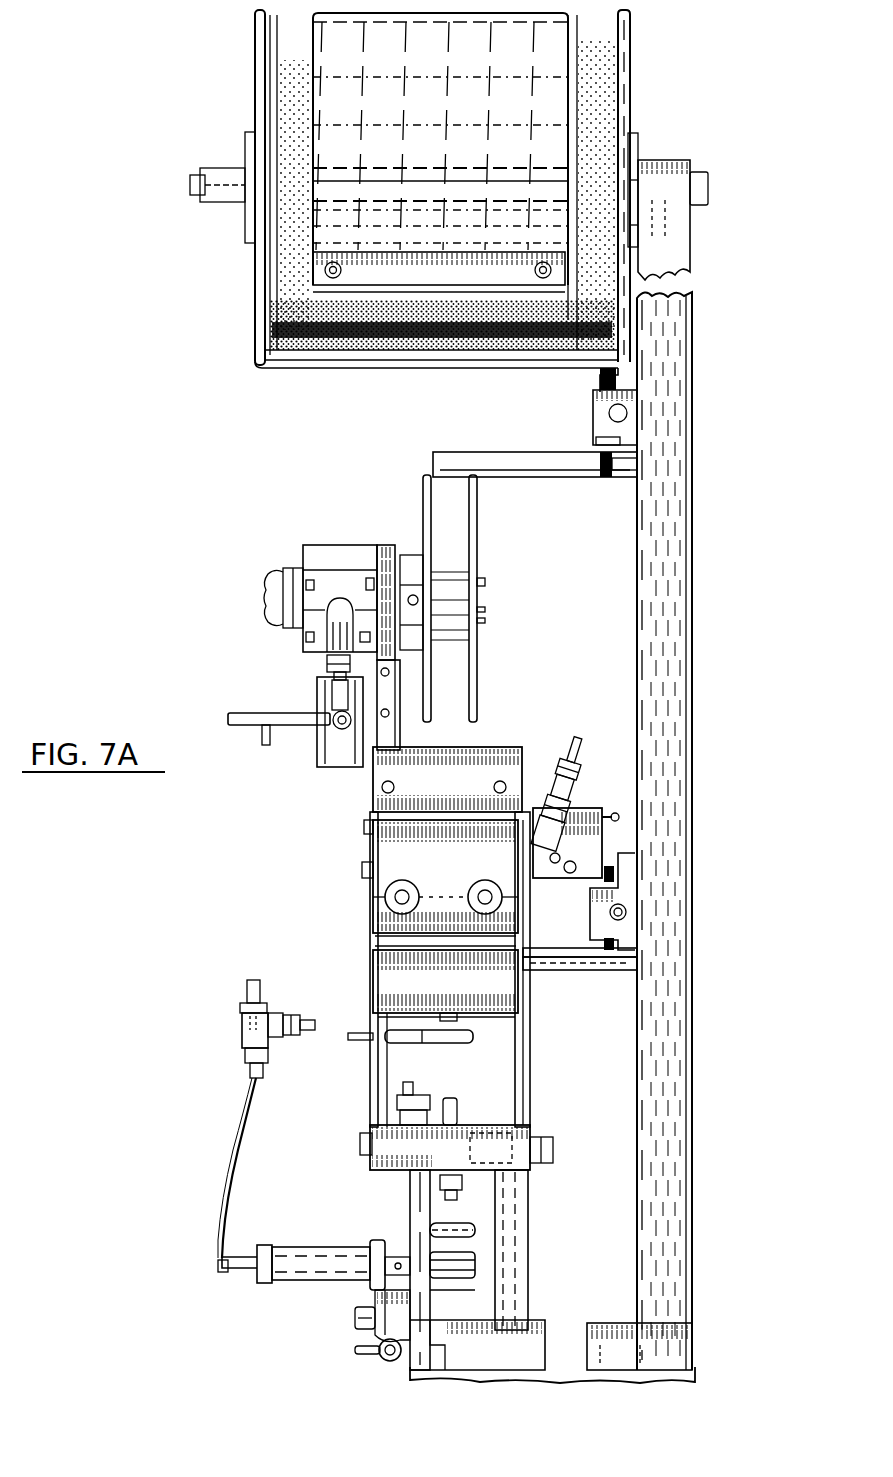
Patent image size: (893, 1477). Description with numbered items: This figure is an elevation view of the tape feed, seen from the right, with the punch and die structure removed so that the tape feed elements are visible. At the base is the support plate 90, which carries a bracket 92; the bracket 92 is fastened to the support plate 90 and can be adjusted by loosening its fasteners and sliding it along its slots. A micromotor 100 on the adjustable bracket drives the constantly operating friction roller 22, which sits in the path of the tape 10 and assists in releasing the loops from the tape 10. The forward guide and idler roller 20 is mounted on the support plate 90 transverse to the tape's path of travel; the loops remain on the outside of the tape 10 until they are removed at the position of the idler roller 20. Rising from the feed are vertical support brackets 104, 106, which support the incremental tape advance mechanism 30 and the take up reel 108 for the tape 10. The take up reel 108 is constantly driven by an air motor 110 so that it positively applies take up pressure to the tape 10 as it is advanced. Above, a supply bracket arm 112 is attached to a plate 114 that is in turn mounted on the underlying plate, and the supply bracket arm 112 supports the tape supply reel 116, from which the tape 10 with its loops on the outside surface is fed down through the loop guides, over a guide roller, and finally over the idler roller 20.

The tape 10 is at (595, 125).
The tape supply reel 116 is at (627, 70).
The take up reel 108 is at (425, 518).
The air motor 110 is at (322, 563).
The incremental tape advance mechanism 30 is at (357, 1018).
The supply bracket arm 112 is at (657, 948).
The vertical support bracket 104 is at (372, 1068).
The vertical support bracket 106 is at (515, 1072).
The forward guide and idler roller 20 is at (462, 1250).
The friction roller 22 is at (475, 1257).
The micromotor 100 is at (301, 1258).
The plate 114 is at (648, 1338).
The support plate 90 is at (420, 1320).
The bracket 92 is at (392, 1316).